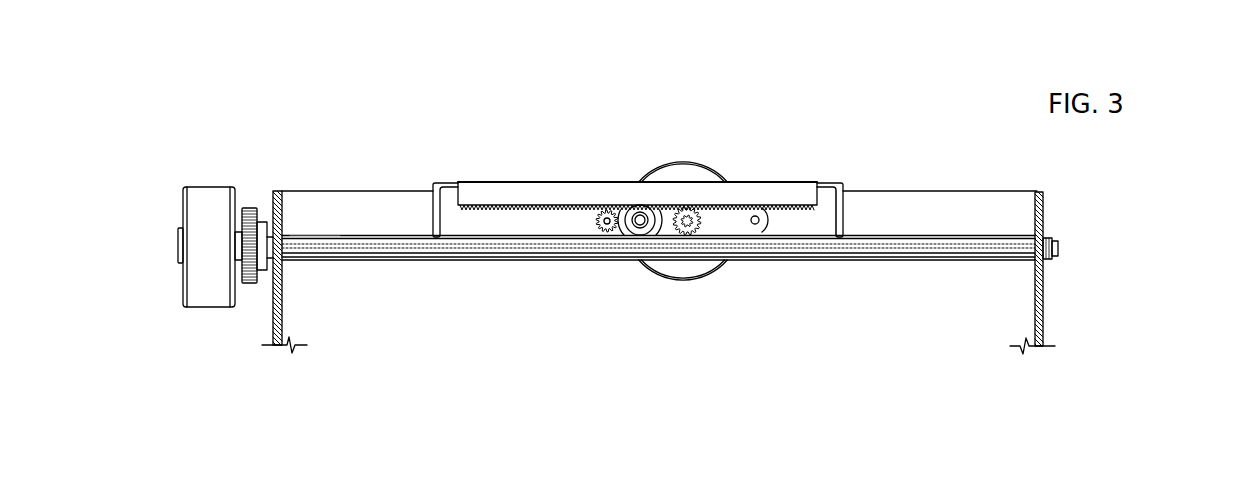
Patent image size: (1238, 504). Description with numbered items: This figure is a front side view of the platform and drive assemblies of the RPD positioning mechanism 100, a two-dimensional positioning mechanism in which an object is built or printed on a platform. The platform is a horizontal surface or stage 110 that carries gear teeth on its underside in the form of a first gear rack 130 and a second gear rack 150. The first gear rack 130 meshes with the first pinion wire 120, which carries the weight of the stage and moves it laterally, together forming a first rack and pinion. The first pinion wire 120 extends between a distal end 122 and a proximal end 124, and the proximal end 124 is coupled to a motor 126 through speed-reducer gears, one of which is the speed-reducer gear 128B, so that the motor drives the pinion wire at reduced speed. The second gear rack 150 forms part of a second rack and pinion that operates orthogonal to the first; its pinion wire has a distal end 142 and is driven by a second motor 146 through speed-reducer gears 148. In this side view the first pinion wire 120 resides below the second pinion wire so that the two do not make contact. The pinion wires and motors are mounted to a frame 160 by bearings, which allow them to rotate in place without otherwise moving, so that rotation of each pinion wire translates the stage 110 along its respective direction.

The RPD positioning mechanism 100 is at (482, 117).
The stage 110 is at (553, 168).
The first pinion wire 120 is at (882, 268).
The distal end 122 is at (1053, 260).
The proximal end 124 is at (313, 242).
The motor 126 is at (213, 187).
The speed-reducer gear 128B is at (253, 208).
The first gear rack 130 is at (853, 224).
The distal end 142 is at (648, 227).
The motor 146 is at (703, 177).
The speed-reducer gears 148 is at (612, 222).
The second gear rack 150 is at (552, 218).
The frame 160 is at (283, 300).